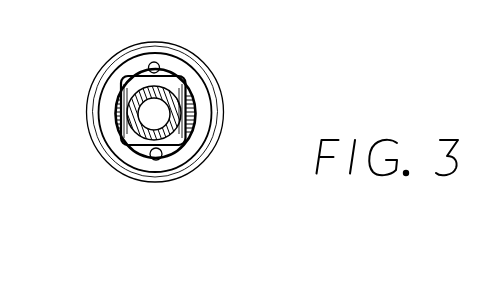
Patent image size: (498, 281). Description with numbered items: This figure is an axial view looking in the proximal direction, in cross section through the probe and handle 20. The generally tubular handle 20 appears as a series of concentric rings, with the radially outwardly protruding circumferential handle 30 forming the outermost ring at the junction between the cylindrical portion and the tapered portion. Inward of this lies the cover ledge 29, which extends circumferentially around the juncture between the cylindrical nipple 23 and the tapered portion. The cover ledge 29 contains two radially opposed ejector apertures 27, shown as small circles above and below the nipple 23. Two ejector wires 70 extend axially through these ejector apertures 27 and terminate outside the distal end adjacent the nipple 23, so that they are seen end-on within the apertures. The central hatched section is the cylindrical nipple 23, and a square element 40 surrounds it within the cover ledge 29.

The handle 20 is at (200, 163).
The cylindrical nipple 23 is at (130, 118).
The ejector apertures 27 is at (168, 160).
The cover ledge 29 is at (133, 72).
The circumferential handle 30 is at (113, 155).
The square locking member 40 is at (177, 112).
The ejector wires 70 is at (159, 67).